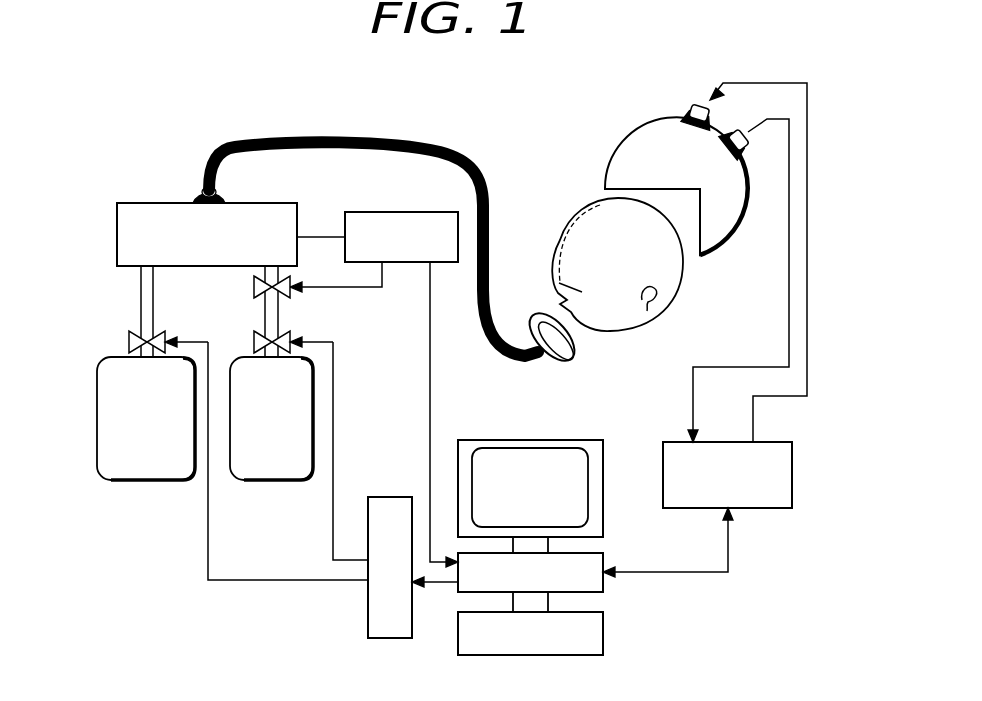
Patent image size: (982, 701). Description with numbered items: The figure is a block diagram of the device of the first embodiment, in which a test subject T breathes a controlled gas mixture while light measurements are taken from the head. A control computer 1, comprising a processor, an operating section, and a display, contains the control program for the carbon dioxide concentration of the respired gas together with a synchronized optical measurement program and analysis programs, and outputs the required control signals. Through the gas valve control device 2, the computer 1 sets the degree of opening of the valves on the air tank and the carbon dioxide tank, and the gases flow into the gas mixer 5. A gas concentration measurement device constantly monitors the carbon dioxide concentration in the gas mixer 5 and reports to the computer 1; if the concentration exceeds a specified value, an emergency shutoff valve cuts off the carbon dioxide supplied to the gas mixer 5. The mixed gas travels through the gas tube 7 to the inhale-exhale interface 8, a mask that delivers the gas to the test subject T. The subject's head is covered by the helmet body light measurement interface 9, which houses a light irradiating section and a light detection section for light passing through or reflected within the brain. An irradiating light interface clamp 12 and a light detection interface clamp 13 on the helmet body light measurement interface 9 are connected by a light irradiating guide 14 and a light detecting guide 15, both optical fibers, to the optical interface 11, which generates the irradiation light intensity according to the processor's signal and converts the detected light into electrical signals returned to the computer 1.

The control computer 1 is at (559, 531).
The gas valve control device 2 is at (385, 498).
The gas mixer 5 is at (140, 206).
The gas tube 7 is at (333, 140).
The inhale-exhale interface 8 is at (556, 360).
The helmet body light measurement interface 9 is at (626, 136).
The optical interface 11 is at (782, 478).
The irradiating light interface clamp 12 is at (694, 101).
The light detection interface clamp 13 is at (746, 158).
The light irradiating guide 14 is at (807, 290).
The light detecting guide 15 is at (789, 254).
The test subject T is at (545, 227).